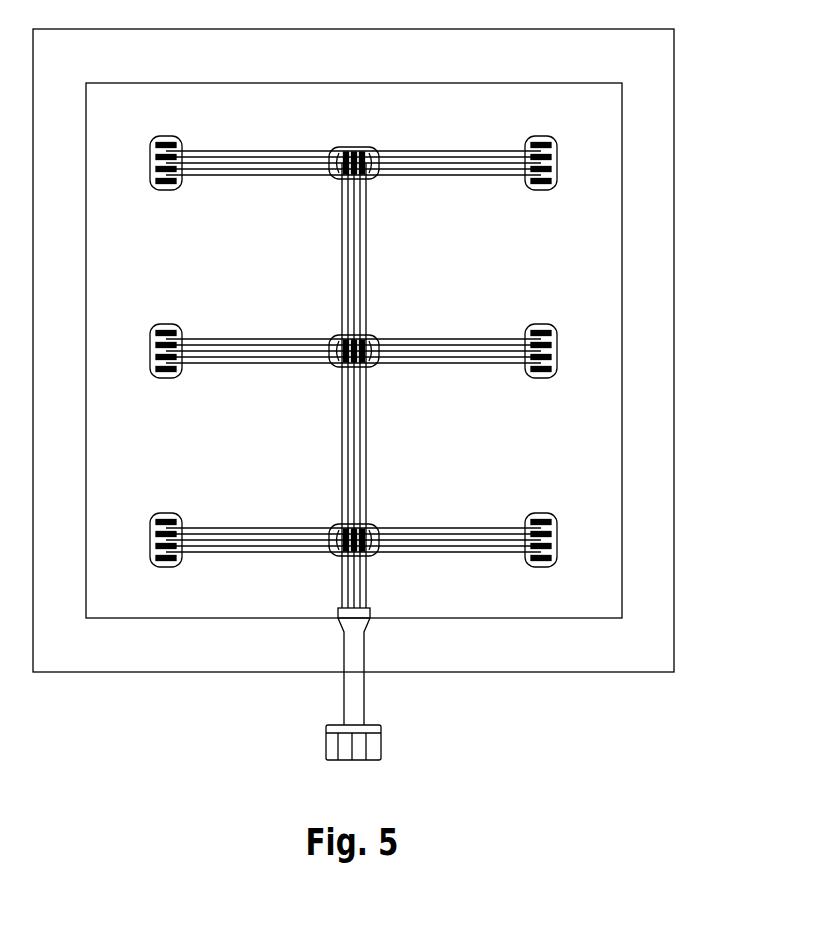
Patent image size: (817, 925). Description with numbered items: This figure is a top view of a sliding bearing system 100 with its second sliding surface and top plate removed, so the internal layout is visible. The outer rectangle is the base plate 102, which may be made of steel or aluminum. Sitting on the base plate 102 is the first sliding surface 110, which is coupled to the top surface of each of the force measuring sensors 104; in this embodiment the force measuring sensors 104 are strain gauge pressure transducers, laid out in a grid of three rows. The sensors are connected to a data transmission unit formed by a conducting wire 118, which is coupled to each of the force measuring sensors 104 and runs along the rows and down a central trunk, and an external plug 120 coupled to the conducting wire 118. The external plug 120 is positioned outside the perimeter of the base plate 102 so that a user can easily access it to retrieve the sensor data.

The sliding bearing system 100 is at (733, 130).
The base plate 102 is at (137, 672).
The force measuring sensors 104 is at (375, 553).
The first sliding surface 110 is at (568, 620).
The conducting wire 118 is at (232, 559).
The external plug 120 is at (382, 745).